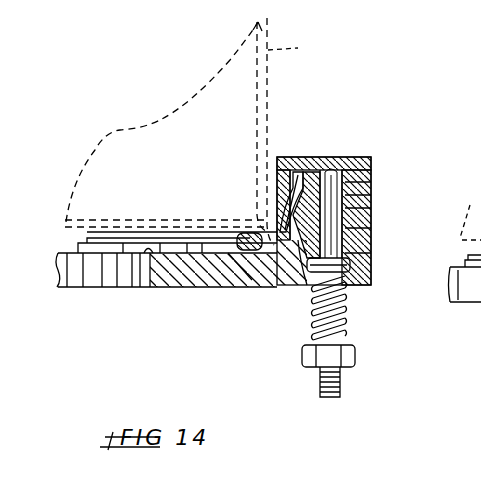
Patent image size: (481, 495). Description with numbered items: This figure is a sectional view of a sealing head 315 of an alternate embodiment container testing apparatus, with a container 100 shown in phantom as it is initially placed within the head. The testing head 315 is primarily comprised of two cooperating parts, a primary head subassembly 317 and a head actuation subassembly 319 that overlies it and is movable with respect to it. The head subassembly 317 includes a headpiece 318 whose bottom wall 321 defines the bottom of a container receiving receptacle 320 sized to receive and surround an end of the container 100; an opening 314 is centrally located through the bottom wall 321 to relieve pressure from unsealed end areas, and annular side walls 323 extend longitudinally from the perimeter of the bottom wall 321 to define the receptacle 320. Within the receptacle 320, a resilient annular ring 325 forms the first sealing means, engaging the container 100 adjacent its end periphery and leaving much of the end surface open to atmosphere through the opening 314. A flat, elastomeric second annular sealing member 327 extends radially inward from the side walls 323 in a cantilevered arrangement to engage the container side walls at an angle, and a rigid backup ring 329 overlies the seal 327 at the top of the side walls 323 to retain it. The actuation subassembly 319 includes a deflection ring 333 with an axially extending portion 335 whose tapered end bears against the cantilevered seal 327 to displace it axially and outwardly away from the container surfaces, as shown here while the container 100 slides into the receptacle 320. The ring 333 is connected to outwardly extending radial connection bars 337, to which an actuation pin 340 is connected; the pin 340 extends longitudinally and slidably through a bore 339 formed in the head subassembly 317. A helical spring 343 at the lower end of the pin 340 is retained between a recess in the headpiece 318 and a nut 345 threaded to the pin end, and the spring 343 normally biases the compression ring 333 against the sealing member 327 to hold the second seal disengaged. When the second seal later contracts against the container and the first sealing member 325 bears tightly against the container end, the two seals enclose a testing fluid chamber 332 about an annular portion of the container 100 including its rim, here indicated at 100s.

The container 100 is at (299, 48).
The sheet support 100s is at (240, 292).
The opening 314 is at (87, 283).
The sealing head 315 is at (396, 154).
The head subassembly 317 is at (375, 233).
The headpiece 318 is at (182, 288).
The head actuation subassembly 319 is at (338, 150).
The container receiving receptacle 320 is at (110, 178).
The bottom wall 321 is at (155, 287).
The annular side walls 323 is at (283, 285).
The annular ring 325 is at (230, 235).
The second annular sealing member 327 is at (374, 193).
The rigid backup ring 329 is at (374, 182).
The testing fluid chamber 332 is at (258, 287).
The deflection ring 333 is at (288, 157).
The axially extending portion 335 is at (272, 190).
The radial connection bars 337 is at (348, 157).
The bores 339 is at (372, 256).
The actuation pin 340 is at (374, 210).
The helical spring 343 is at (342, 313).
The nut 345 is at (356, 350).